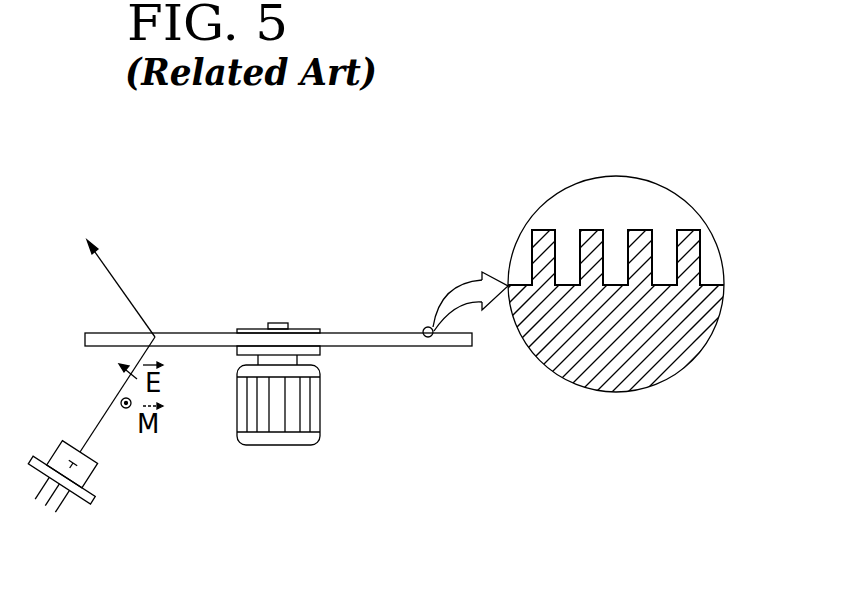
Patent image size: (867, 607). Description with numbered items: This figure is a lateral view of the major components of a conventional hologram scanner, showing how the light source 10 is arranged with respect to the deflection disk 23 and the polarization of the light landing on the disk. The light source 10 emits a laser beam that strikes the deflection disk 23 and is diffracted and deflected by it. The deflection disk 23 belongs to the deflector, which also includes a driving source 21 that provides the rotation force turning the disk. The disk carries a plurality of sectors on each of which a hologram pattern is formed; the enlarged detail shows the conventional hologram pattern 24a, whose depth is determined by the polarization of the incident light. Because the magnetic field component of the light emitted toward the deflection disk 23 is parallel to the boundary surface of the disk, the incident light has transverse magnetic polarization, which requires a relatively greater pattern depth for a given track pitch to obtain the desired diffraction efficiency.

The light source 10 is at (108, 511).
The driving source 21 is at (280, 445).
The deflection disk 23 is at (460, 346).
The hologram pattern 24a is at (567, 247).